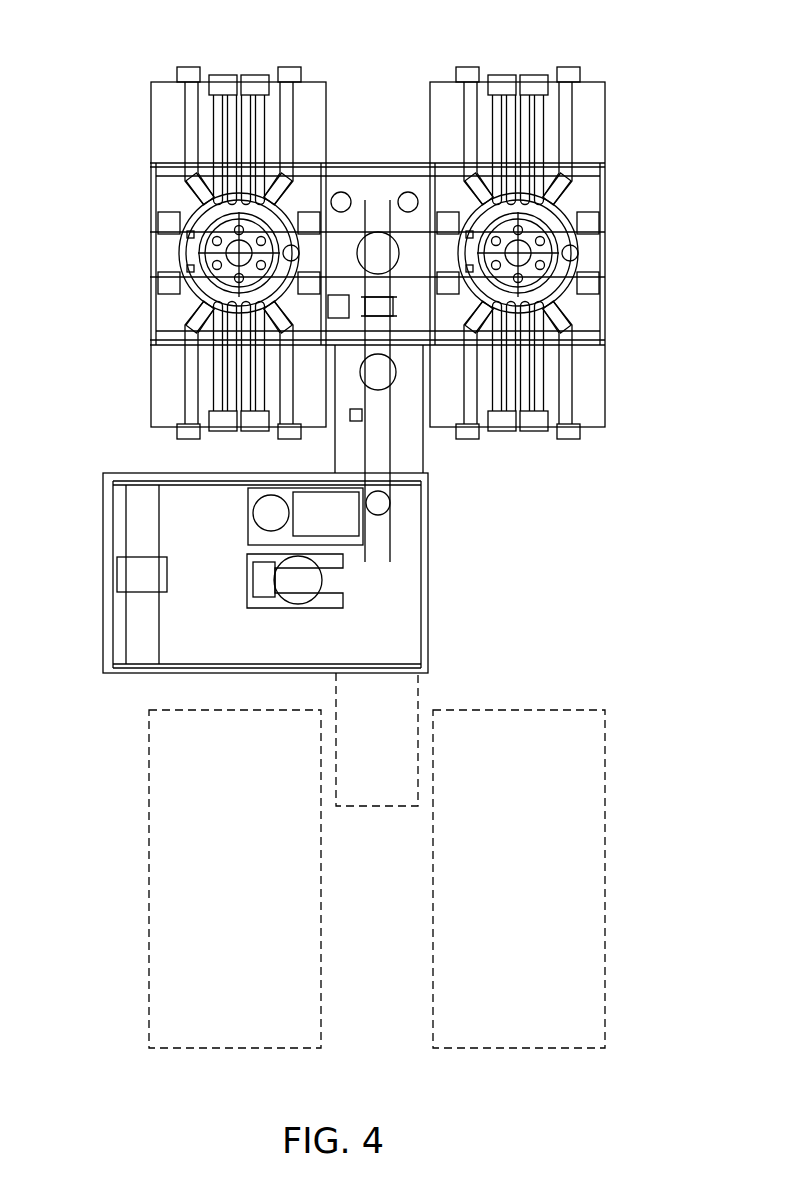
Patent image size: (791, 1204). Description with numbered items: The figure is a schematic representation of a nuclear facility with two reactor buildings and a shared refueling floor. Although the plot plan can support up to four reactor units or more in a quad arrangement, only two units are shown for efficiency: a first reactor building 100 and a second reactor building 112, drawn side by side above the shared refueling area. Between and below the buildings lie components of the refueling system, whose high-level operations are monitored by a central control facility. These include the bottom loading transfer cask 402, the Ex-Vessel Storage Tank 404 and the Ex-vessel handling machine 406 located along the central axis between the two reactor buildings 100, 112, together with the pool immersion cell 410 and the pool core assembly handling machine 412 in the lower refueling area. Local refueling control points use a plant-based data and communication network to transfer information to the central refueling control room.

The first reactor building 100 is at (156, 87).
The second reactor building 112 is at (585, 100).
The bottom loading transfer cask 402 is at (398, 299).
The Ex-Vessel Storage Tank 404 is at (391, 237).
The Ex-vessel handling machine 406 is at (317, 220).
The pool immersion cell 410 is at (400, 505).
The pool core assembly handling machine 412 is at (134, 577).